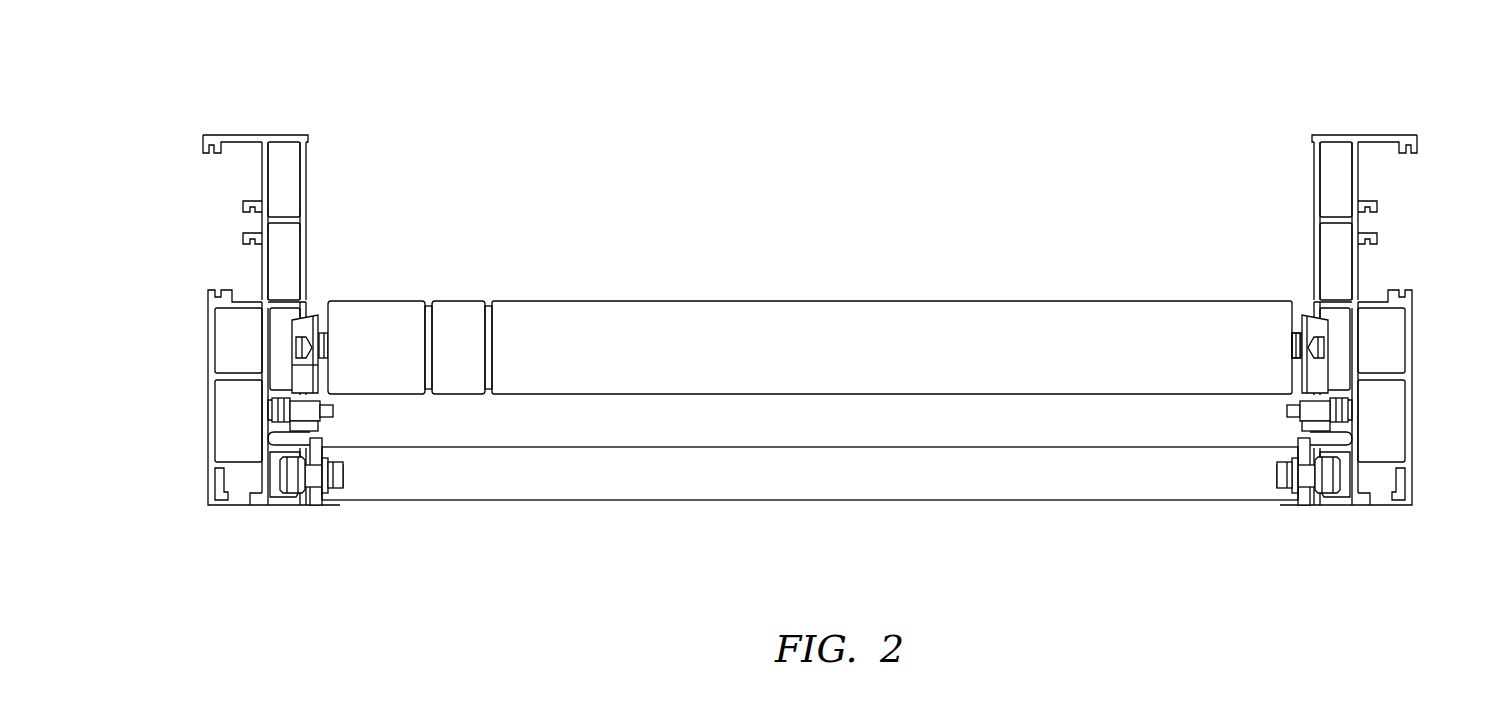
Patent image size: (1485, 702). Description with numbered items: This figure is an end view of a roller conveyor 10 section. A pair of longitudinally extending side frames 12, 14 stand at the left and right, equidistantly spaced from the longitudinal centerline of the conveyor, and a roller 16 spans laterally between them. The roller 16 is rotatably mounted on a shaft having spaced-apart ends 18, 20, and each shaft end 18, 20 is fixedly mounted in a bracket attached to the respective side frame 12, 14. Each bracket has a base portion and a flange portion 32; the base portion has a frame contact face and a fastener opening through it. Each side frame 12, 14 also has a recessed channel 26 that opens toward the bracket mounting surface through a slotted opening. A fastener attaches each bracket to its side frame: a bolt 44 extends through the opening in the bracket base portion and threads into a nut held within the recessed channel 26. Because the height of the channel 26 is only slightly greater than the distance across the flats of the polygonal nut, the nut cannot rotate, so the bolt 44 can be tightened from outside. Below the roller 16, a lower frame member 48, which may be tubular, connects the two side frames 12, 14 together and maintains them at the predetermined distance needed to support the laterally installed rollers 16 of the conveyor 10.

The roller conveyor 10 is at (1206, 114).
The side frame 12 is at (306, 268).
The side frame 14 is at (1314, 268).
The roller 16 is at (817, 362).
The shaft end 18 is at (297, 333).
The shaft end 20 is at (1323, 333).
The recessed channel 26 is at (268, 422).
The flange portion 32 is at (293, 365).
The first portion 44 is at (327, 403).
The lower frame member 48 is at (809, 487).